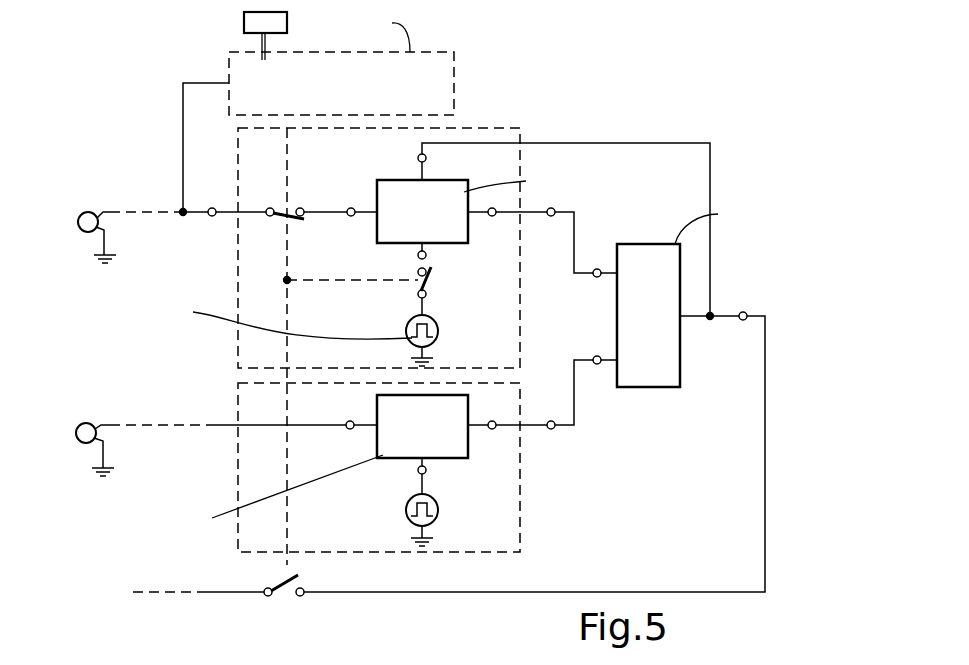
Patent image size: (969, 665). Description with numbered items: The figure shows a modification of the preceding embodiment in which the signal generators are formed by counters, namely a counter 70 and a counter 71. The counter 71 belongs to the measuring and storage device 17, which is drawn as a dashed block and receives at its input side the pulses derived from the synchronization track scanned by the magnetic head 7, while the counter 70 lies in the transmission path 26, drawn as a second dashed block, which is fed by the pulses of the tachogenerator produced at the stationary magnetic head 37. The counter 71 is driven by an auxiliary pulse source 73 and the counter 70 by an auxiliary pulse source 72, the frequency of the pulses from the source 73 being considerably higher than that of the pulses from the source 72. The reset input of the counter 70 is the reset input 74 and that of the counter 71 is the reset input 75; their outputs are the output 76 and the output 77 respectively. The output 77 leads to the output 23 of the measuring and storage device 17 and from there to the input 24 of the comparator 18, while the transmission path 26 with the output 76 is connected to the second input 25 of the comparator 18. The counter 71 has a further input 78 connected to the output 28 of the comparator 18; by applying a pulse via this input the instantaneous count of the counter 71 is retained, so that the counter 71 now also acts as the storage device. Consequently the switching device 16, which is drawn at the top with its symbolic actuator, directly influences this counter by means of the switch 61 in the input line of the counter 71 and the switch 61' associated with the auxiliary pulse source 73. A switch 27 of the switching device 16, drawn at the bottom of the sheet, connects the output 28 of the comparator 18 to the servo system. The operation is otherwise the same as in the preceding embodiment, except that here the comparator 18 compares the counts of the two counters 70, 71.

The magnetic head 7 is at (95, 214).
The stationary magnetic head 37 is at (96, 426).
The switching device 16 is at (470, 90).
The measuring and storage device 17 is at (523, 128).
The transmission path 26 is at (536, 510).
The switch 61 is at (293, 185).
The switch 61' is at (388, 298).
The counter 71 is at (385, 196).
The counter 70 is at (386, 450).
The auxiliary pulse source 73 is at (433, 331).
The auxiliary pulse source 72 is at (433, 513).
The reset input 74 is at (350, 430).
The reset input 75 is at (350, 217).
The output 76 is at (492, 430).
The output 77 is at (492, 217).
The further input 78 is at (427, 158).
The output 23 is at (551, 217).
The input 24 is at (597, 268).
The second input 25 is at (597, 365).
The output 28 is at (743, 311).
The comparator 18 is at (659, 265).
The switch 27 is at (293, 596).